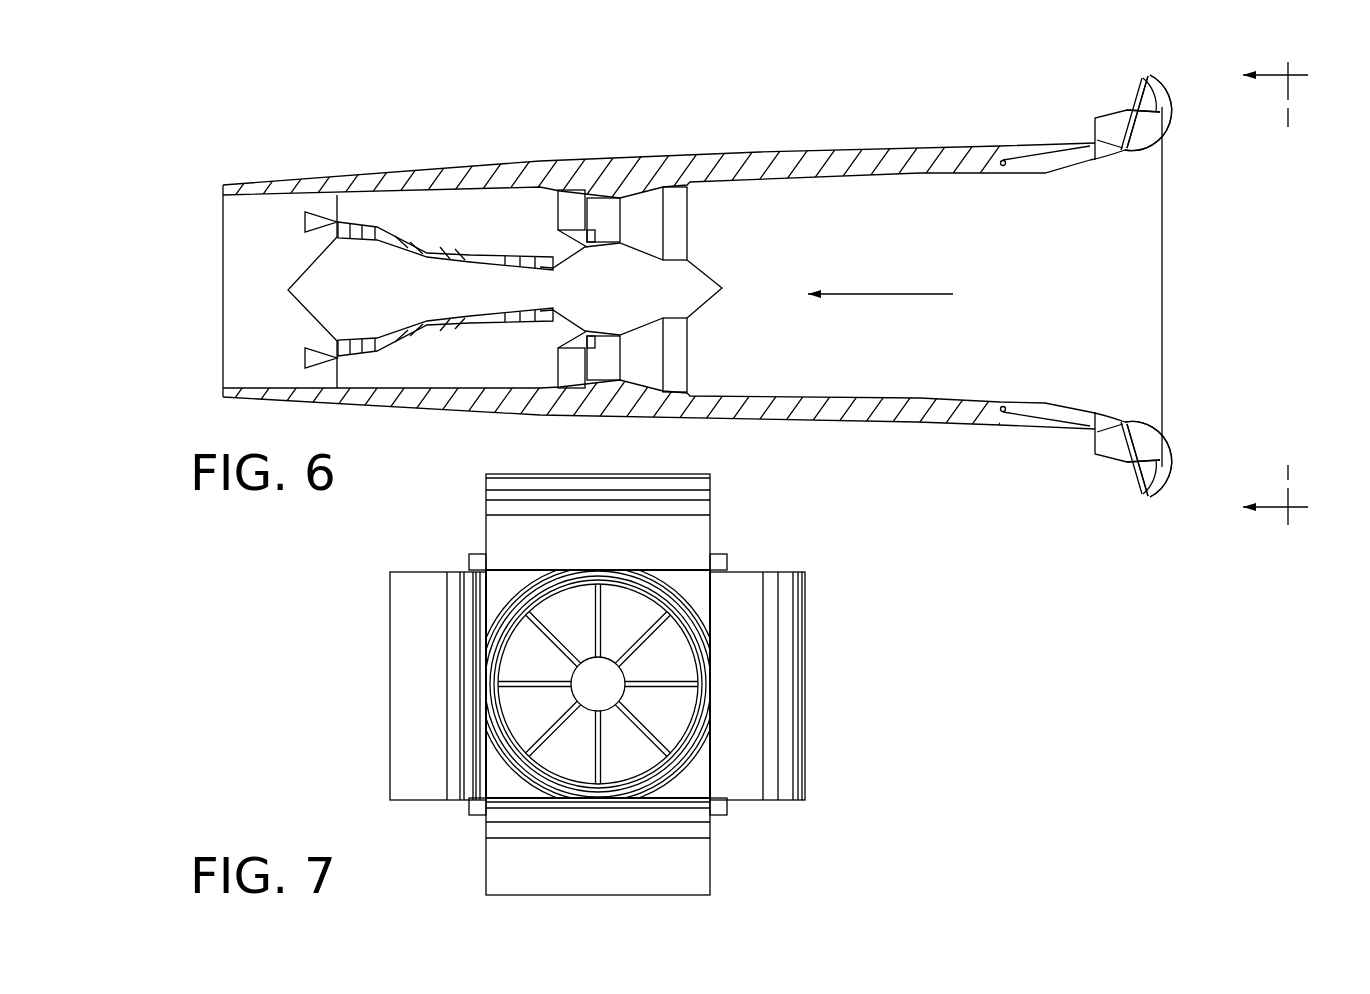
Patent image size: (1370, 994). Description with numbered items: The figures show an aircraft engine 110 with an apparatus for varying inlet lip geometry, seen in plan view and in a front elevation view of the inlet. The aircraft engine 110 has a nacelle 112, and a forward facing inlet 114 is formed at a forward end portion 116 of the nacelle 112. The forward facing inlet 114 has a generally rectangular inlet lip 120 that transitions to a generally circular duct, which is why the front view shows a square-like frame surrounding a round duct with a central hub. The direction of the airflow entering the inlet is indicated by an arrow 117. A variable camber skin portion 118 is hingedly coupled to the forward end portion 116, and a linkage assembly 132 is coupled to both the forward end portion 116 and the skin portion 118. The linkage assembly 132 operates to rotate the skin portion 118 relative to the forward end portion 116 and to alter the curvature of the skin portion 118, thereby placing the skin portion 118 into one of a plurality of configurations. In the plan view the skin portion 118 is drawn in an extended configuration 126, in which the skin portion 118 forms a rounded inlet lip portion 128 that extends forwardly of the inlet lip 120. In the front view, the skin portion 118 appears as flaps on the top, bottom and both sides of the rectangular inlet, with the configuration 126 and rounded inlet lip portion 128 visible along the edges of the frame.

In FIG. 6, the aircraft engine 110 is at (325, 145).
In FIG. 6, the nacelle 112 is at (287, 403).
In FIG. 6, the forward facing inlet 114 is at (1108, 283).
In FIG. 7, the forward facing inlet 114 is at (725, 696).
In FIG. 6, the forward end portion 116 is at (530, 162).
In FIG. 6, the arrow 117 is at (890, 294).
In FIG. 6, the variable camber skin portion 118 is at (1147, 137).
In FIG. 7, the variable camber skin portion 118 is at (695, 525).
In FIG. 6, the inlet lip 120 is at (1162, 213).
In FIG. 6, the configuration 126 is at (1160, 97).
In FIG. 7, the configuration 126 is at (447, 755).
In FIG. 6, the rounded inlet lip portion 128 is at (1160, 112).
In FIG. 7, the rounded inlet lip portion 128 is at (438, 688).
In FIG. 6, the linkage assembly 132 is at (1117, 105).